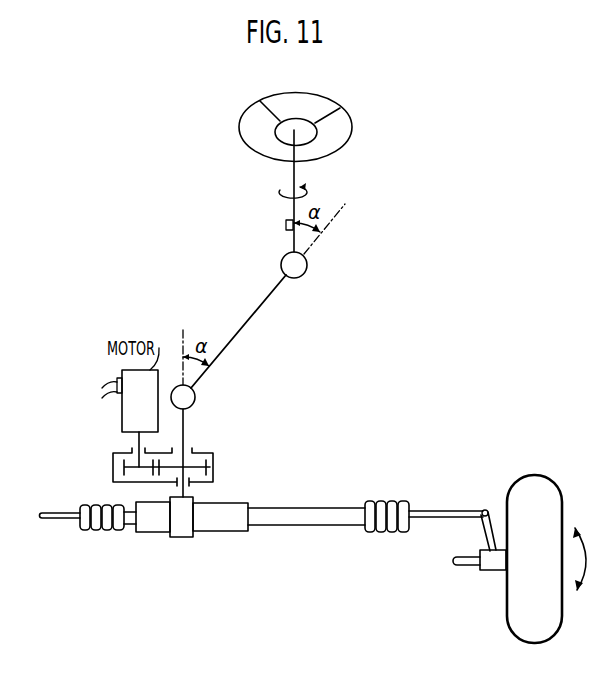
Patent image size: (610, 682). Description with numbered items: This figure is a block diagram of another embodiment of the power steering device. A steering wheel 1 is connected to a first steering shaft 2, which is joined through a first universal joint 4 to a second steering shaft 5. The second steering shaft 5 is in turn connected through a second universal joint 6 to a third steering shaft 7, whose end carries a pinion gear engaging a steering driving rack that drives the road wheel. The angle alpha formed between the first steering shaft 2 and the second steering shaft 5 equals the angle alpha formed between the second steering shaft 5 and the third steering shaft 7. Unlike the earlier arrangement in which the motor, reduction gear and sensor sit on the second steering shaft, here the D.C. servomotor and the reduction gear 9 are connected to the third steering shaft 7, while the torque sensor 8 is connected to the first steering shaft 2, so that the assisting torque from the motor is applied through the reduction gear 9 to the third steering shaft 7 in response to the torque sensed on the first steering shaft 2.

The steering wheel 1 is at (352, 131).
The first steering shaft 2 is at (292, 205).
The first universal joint 4 is at (307, 272).
The second steering shaft 5 is at (260, 308).
The second universal joint 6 is at (195, 401).
The third steering shaft 7 is at (185, 431).
The torque sensor 8 is at (285, 225).
The reduction gear 9 is at (213, 472).